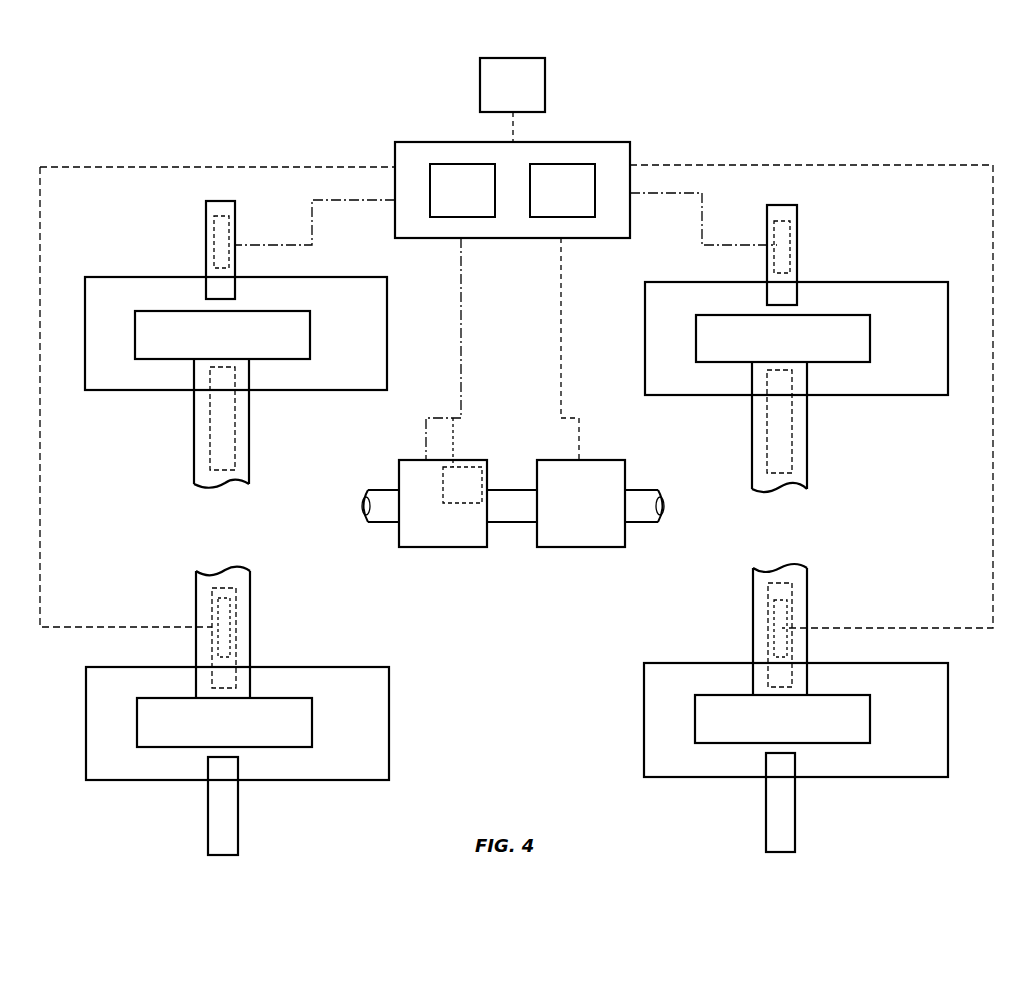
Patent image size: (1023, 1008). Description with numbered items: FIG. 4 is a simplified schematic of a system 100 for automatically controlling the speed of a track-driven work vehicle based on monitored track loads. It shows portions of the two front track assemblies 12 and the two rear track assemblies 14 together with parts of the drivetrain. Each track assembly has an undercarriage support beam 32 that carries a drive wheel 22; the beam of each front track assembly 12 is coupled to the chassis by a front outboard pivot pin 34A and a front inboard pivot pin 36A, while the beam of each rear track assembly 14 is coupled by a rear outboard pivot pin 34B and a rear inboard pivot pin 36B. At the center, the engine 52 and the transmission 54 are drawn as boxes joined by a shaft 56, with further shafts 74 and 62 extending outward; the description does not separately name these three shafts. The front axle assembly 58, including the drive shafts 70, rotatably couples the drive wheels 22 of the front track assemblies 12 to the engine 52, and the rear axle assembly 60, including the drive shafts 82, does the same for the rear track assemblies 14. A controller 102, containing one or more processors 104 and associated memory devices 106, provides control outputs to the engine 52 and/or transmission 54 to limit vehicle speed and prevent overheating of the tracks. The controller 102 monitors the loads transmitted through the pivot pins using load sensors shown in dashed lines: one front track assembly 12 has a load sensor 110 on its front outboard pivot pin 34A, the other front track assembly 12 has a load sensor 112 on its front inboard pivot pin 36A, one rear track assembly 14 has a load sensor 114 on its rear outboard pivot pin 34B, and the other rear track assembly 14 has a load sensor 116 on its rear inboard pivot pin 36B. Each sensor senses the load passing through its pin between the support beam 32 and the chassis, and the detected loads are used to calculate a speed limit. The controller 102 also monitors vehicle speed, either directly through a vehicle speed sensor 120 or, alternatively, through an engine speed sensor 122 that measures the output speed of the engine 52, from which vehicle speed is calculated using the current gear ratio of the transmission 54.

The system 100 is at (844, 126).
The controller 102 is at (465, 176).
The processor 104 is at (477, 202).
The memory device 106 is at (577, 202).
The vehicle speed sensor 120 is at (527, 96).
The engine speed sensor 122 is at (476, 496).
The front track assembly 12 is at (905, 221).
The rear track assembly 14 is at (141, 228).
The drive wheel 22 is at (310, 320).
The undercarriage support beam 32 is at (315, 390).
The front outboard pivot pin 34A is at (797, 222).
The rear outboard pivot pin 34B is at (206, 247).
The front inboard pivot pin 36A is at (792, 413).
The rear inboard pivot pin 36B is at (235, 408).
The engine 52 is at (432, 517).
The transmission 54 is at (592, 517).
The motor output shaft 56 is at (512, 510).
The front axle assembly 58 is at (881, 528).
The rear axle assembly 60 is at (181, 524).
The first gearbox output shaft 62 is at (648, 510).
The drive shaft 70 is at (752, 425).
The second output shaft 74 is at (383, 510).
The drive shaft 82 is at (249, 460).
The load sensor 110 is at (790, 266).
The load sensor 112 is at (785, 620).
The load sensor 114 is at (237, 235).
The load sensor 116 is at (230, 622).